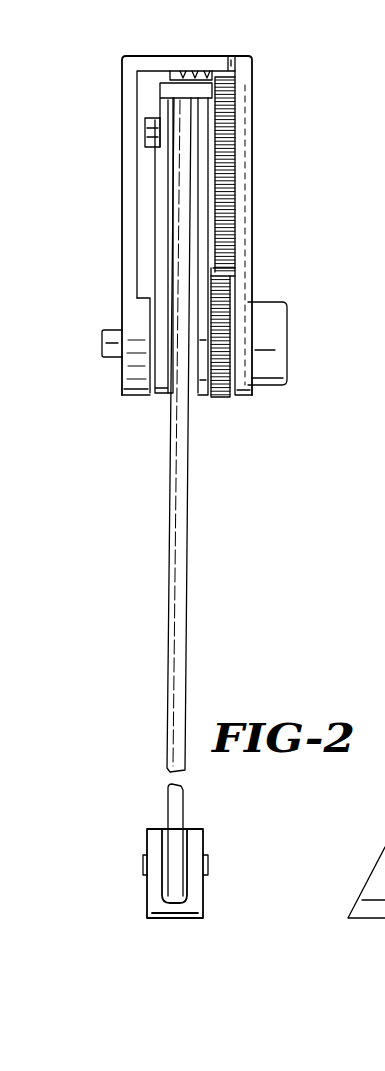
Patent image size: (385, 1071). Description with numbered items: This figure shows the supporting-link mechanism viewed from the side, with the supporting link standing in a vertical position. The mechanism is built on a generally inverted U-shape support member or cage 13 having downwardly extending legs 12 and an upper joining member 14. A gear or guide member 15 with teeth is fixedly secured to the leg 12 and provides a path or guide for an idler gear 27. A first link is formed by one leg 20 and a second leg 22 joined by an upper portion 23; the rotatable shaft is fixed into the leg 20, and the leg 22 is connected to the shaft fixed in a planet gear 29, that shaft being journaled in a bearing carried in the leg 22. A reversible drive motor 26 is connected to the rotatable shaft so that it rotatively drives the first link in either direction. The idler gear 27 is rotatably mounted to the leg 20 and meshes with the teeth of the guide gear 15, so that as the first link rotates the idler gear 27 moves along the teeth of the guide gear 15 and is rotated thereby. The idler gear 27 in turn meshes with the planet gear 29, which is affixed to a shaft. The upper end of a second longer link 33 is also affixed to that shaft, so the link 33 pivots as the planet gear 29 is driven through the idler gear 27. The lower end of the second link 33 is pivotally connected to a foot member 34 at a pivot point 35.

The leg 12 is at (247, 210).
The housing 13 is at (125, 220).
The upper joining member 14 is at (233, 57).
The gear or guide member 15 is at (220, 397).
The leg of link 20 is at (203, 157).
The second leg of link 22 is at (165, 165).
The upper portion 23 is at (185, 90).
The reversible drive motor 26 is at (287, 348).
The idler gear 27 is at (223, 250).
The planet gear 29 is at (225, 115).
The second link 33 is at (187, 602).
The foot member 34 is at (200, 907).
The pivot point 35 is at (208, 860).